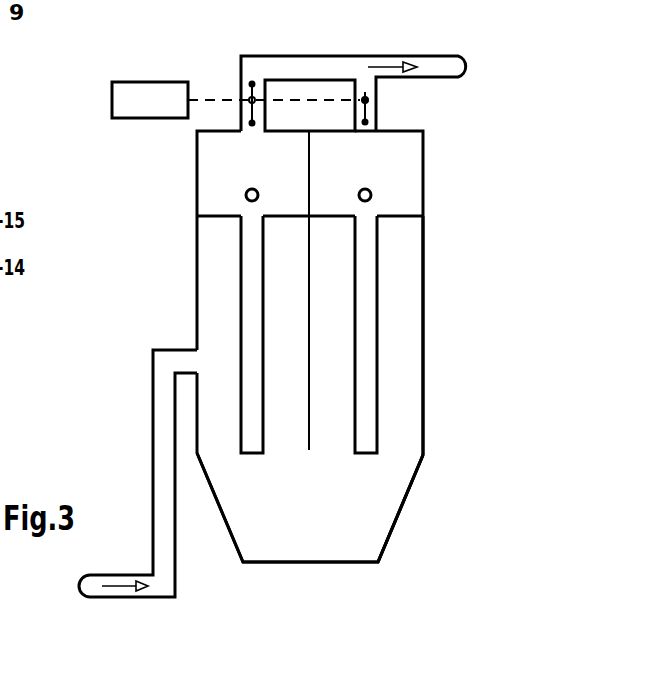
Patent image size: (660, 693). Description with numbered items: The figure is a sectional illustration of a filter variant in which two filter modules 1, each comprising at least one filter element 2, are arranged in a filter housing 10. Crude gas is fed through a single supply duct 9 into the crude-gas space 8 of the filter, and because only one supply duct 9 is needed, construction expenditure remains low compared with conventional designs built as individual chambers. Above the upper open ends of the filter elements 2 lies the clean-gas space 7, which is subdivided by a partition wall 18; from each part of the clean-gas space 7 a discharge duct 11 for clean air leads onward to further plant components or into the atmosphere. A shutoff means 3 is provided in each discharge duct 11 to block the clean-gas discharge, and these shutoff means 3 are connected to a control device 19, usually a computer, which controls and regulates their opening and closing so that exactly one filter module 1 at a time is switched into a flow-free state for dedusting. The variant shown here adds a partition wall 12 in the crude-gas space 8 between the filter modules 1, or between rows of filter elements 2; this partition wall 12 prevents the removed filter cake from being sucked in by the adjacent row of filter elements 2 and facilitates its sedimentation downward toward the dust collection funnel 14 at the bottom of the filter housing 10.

The filter module 1 is at (197, 167).
The filter element 2 is at (252, 383).
The shutoff means 3 is at (365, 100).
The clean-gas space 7 is at (398, 193).
The crude-gas space 8 is at (262, 503).
The supply duct 9 is at (173, 563).
The filter housing 10 is at (422, 310).
The discharge duct 11 is at (252, 123).
The partition wall 12 is at (310, 438).
The dust collection funnel 14 is at (407, 488).
The partition wall 18 is at (309, 175).
The control device 19 is at (137, 92).